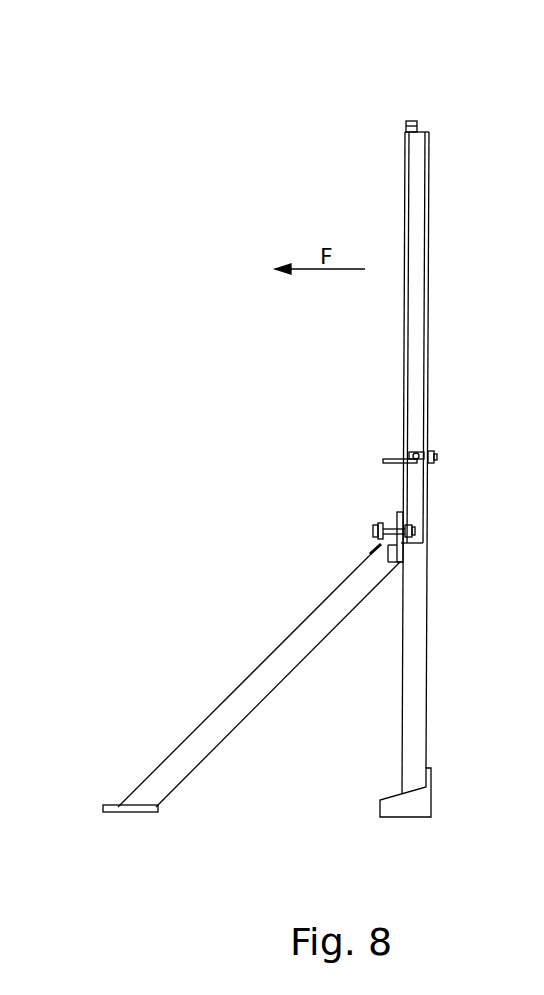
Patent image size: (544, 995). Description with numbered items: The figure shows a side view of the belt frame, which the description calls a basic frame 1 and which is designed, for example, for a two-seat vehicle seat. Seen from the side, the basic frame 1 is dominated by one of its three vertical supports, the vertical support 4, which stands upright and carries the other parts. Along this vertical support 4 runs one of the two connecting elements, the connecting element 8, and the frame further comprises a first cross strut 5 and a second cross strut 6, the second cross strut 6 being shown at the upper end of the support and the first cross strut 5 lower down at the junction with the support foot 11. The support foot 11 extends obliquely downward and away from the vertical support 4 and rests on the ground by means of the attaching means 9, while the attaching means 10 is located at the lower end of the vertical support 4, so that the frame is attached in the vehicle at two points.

The basic frame 1 is at (78, 828).
The vertical support 4 is at (418, 700).
The first cross strut 5 is at (377, 524).
The second cross strut 6 is at (419, 131).
The connecting element 8 is at (414, 375).
The attaching means 9 is at (130, 811).
The attaching means 10 is at (408, 805).
The support foot 11 is at (202, 743).